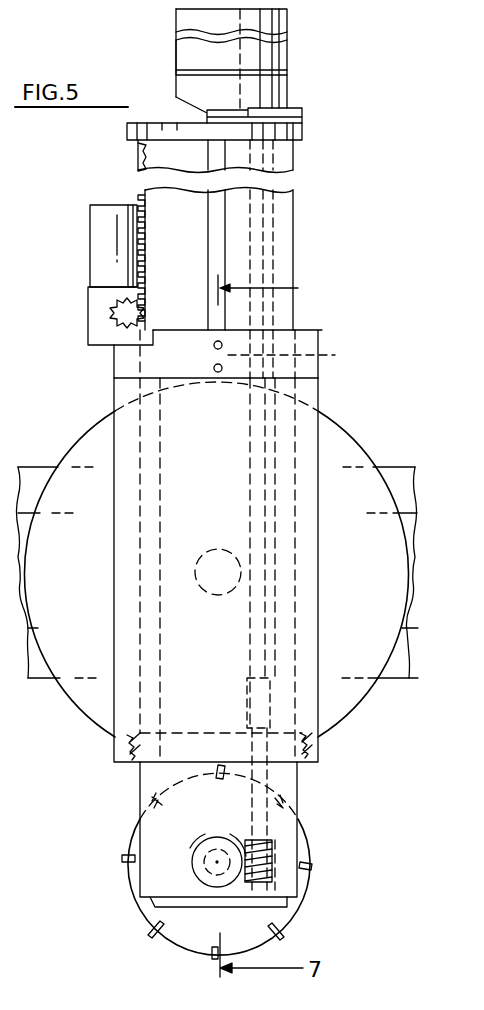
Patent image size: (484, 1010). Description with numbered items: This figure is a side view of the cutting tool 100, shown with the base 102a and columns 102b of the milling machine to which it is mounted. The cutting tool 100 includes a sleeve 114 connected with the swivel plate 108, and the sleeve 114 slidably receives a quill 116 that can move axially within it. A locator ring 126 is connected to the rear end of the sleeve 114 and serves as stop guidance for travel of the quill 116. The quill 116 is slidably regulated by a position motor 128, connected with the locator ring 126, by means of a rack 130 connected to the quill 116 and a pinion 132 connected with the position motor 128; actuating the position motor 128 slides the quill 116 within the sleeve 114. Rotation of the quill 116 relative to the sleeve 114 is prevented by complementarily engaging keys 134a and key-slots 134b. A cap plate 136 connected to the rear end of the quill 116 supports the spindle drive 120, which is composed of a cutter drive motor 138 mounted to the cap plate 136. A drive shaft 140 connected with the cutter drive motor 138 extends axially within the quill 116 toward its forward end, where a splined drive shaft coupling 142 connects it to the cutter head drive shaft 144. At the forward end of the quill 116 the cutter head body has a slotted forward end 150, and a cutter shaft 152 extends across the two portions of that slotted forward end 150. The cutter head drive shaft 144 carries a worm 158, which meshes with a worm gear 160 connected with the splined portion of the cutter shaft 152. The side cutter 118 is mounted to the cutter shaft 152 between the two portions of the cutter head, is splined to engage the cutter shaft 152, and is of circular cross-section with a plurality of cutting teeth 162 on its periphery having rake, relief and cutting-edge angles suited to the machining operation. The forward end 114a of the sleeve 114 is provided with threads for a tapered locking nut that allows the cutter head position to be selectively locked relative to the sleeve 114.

The cutting tool 100 is at (79, 207).
The base 102a is at (5, 825).
The columns 102b is at (37, 467).
The swivel plate 108 is at (100, 420).
The sleeve 114 is at (320, 385).
The forward end of the sleeve 114a is at (125, 762).
The quill 116 is at (298, 192).
The side cutter 118 is at (128, 858).
The spindle drive 120 is at (300, 48).
The locator ring 126 is at (322, 330).
The position motor 128 is at (90, 240).
The rack 130 is at (140, 196).
The pinion 132 is at (111, 312).
The keys 134a is at (310, 349).
The key-slots 134b is at (218, 222).
The cap plate 136 is at (305, 128).
The cutter drive motor 138 is at (176, 50).
The drive shaft 140 is at (267, 587).
The splined drive shaft coupling 142 is at (247, 690).
The cutter head drive shaft 144 is at (263, 782).
The slotted forward end 150 is at (140, 822).
The cutter shaft 152 is at (207, 867).
The worm 158 is at (272, 882).
The worm gear 160 is at (213, 835).
The cutting teeth 162 is at (213, 953).